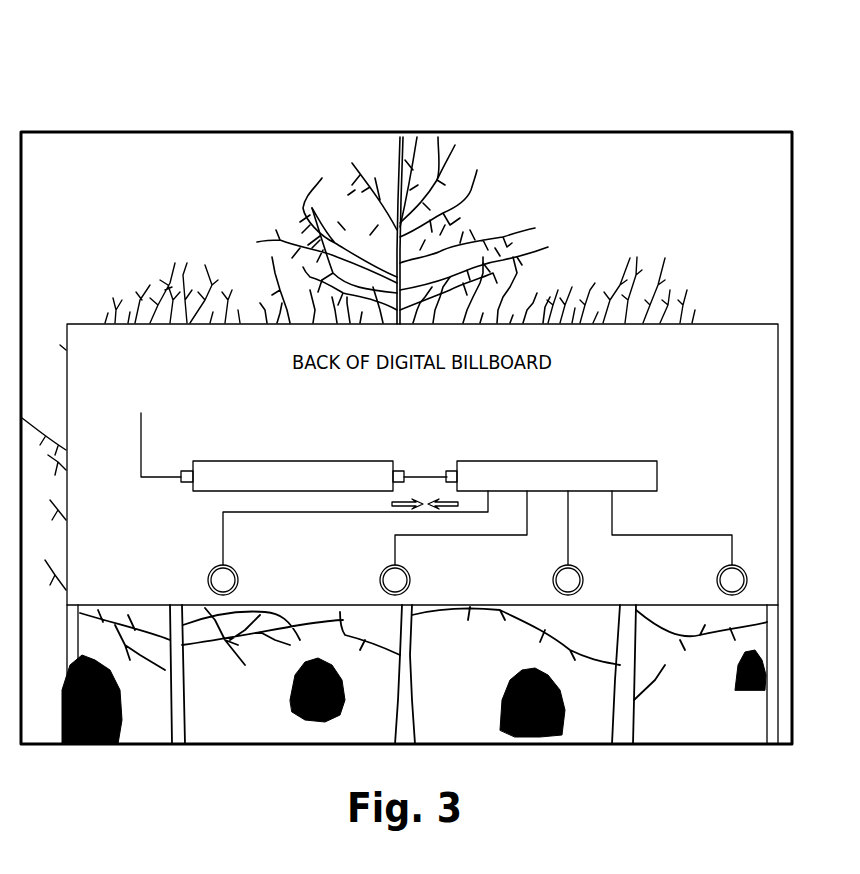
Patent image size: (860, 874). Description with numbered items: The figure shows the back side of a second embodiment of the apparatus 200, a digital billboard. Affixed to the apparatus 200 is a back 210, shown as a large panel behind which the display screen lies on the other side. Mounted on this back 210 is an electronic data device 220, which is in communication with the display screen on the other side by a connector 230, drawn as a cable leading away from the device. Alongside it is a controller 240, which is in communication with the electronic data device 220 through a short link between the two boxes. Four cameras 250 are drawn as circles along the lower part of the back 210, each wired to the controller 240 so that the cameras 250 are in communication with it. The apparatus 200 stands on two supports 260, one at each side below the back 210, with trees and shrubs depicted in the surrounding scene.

The apparatus 200 is at (566, 90).
The back 210 is at (425, 471).
The electronic data device 220 is at (292, 460).
The connector 230 is at (141, 413).
The controller 240 is at (570, 460).
The cameras 250 is at (386, 591).
The supports 260 is at (72, 745).